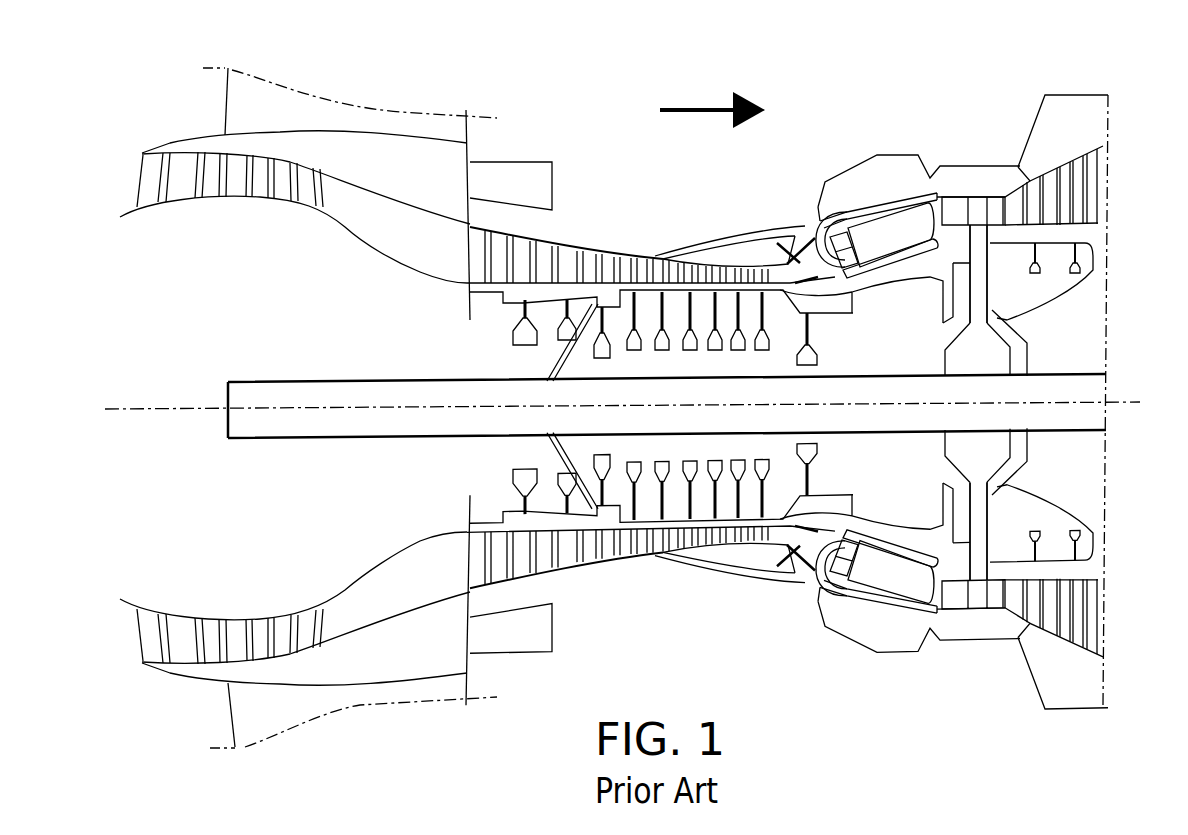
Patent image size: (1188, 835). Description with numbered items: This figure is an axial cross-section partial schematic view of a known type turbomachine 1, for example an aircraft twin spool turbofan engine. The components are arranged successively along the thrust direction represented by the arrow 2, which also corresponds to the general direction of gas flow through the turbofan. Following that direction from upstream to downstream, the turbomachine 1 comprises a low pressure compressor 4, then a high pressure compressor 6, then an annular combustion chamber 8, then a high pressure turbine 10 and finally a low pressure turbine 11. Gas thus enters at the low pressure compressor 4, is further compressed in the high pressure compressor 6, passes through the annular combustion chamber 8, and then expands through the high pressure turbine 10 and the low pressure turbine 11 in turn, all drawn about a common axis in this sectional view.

The turbomachine 1 is at (815, 150).
The arrow 2 is at (680, 110).
The low pressure compressor 4 is at (235, 203).
The high pressure compressor 6 is at (681, 295).
The annular combustion chamber 8 is at (895, 249).
The high pressure turbine 10 is at (960, 205).
The low pressure turbine 11 is at (1026, 208).